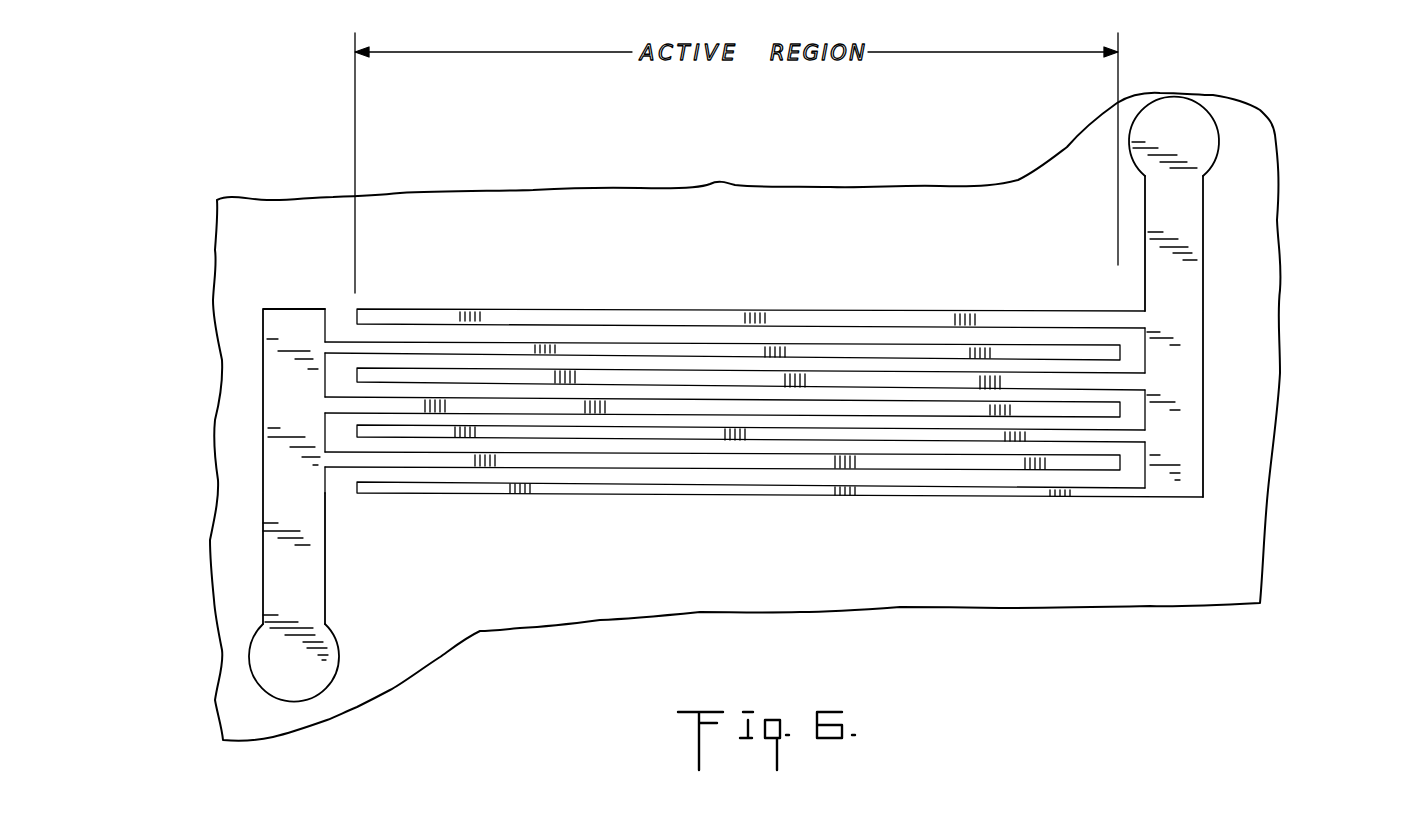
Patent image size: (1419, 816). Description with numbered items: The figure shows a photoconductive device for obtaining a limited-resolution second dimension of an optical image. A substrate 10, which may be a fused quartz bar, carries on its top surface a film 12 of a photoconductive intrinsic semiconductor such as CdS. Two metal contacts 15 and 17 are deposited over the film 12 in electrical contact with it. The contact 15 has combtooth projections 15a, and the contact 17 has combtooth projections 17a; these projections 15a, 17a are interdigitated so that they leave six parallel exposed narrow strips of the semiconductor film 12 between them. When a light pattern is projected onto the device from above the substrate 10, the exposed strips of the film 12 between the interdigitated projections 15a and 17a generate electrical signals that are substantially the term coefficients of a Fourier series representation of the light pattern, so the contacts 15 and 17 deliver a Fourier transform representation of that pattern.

The substrate 10 is at (828, 191).
The film 12 is at (616, 362).
The contact 15 is at (297, 605).
The combtooth projections 15a is at (339, 347).
The contact 17 is at (1198, 148).
The combtooth projections 17a is at (402, 320).